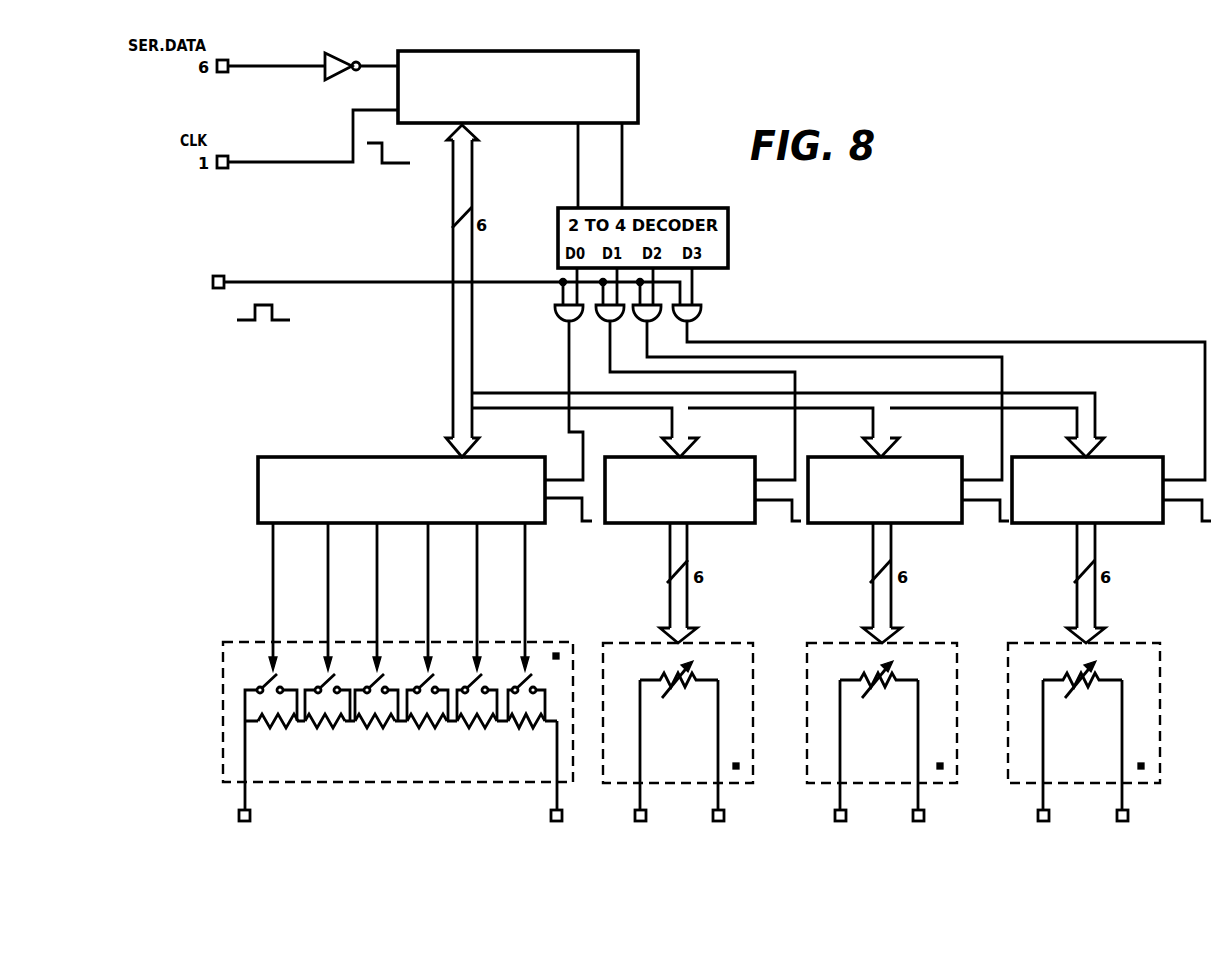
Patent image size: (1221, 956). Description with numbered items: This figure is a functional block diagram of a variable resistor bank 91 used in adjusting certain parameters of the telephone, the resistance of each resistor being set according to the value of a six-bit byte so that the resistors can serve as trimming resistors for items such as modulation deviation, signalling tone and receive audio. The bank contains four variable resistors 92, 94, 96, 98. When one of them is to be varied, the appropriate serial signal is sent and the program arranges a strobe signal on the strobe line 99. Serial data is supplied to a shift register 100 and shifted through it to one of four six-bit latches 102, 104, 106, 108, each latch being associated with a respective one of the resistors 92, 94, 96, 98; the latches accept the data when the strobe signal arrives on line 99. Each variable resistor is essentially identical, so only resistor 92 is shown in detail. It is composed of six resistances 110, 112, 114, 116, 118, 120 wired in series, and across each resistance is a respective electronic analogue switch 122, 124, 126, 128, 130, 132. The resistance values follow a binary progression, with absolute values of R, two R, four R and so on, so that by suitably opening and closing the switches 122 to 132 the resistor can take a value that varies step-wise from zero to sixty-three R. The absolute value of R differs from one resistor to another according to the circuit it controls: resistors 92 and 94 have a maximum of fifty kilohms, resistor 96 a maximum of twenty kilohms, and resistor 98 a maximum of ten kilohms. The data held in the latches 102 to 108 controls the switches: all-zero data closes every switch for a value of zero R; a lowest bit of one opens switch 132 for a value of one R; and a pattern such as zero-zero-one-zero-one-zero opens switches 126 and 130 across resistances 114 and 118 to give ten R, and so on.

The variable resistor bank 91 is at (836, 330).
The variable resistor 92 is at (226, 775).
The variable resistor 94 is at (742, 643).
The variable resistor 96 is at (828, 643).
The variable resistor 98 is at (1026, 643).
The strobe line 99 is at (375, 284).
The shift register 100 is at (638, 72).
The 6-bit latch 102 is at (340, 457).
The 6-bit latch 104 is at (622, 523).
The 6-bit latch 106 is at (848, 523).
The 6-bit latch 108 is at (1050, 523).
The resistance 110 is at (267, 723).
The resistance 112 is at (311, 730).
The resistance 114 is at (357, 735).
The resistance 116 is at (440, 731).
The resistance 118 is at (443, 730).
The resistance 120 is at (513, 730).
The electronic analogue switch 122 is at (268, 682).
The electronic analogue switch 124 is at (318, 683).
The electronic analogue switch 126 is at (367, 683).
The electronic analogue switch 128 is at (417, 683).
The electronic analogue switch 130 is at (482, 676).
The electronic analogue switch 132 is at (527, 677).